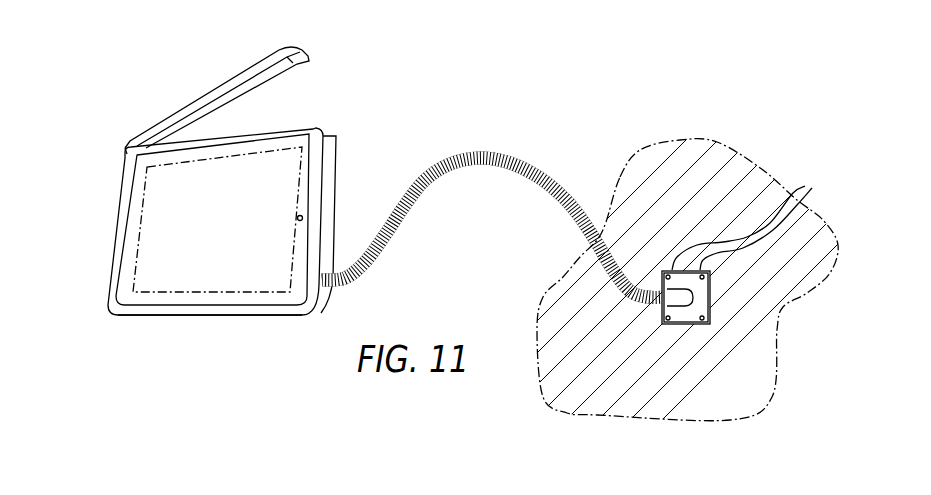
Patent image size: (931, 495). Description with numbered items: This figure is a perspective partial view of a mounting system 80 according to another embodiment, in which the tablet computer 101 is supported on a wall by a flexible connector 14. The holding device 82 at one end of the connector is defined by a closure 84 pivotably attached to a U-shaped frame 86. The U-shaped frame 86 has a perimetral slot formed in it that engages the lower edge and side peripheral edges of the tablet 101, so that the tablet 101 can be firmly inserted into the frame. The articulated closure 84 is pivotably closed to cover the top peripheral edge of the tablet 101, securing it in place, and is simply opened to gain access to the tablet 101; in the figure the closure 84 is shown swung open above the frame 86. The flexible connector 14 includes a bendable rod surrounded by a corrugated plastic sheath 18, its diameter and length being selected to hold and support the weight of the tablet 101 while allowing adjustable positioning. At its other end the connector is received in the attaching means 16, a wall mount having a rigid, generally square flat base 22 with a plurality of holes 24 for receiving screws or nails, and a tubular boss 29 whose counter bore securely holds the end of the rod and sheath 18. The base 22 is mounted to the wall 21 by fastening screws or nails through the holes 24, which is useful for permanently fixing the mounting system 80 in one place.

The mounting system 80 is at (438, 78).
The holding device 82 is at (132, 104).
The closure 84 is at (206, 100).
The U-shaped frame 86 is at (135, 316).
The tablet computer 101 is at (228, 230).
The flexible connector 14 is at (493, 147).
The corrugated plastic sheath 18 is at (419, 198).
The attaching means 16 is at (695, 215).
The wall 21 is at (618, 383).
The base 22 is at (683, 319).
The tubular boss 29 is at (682, 298).
The holes 24 is at (793, 194).